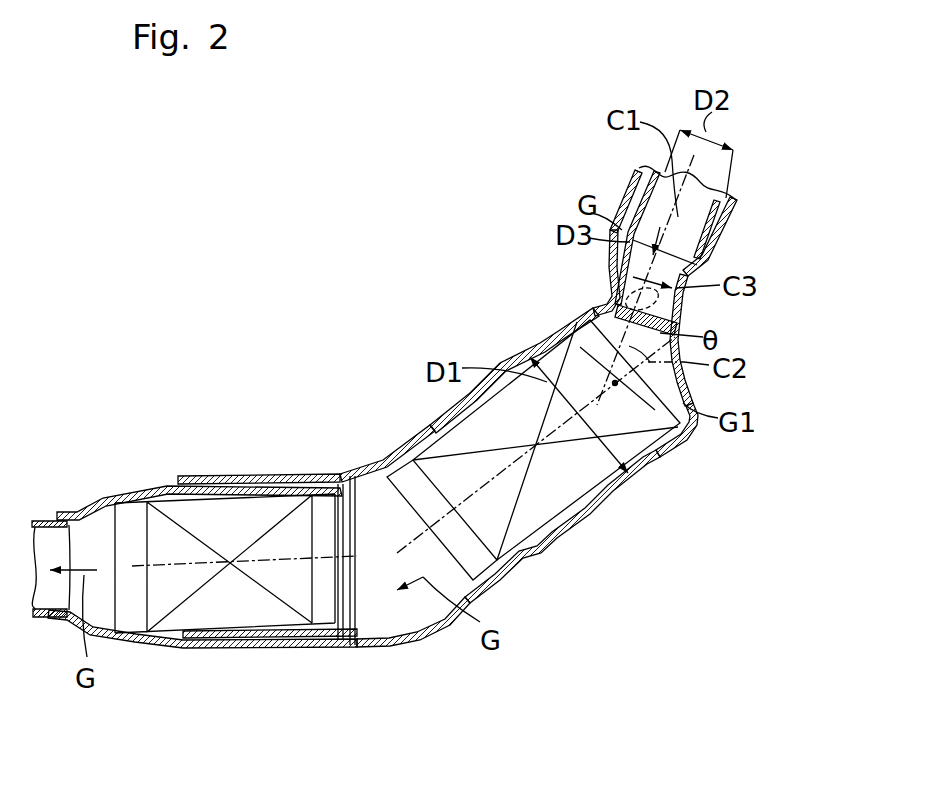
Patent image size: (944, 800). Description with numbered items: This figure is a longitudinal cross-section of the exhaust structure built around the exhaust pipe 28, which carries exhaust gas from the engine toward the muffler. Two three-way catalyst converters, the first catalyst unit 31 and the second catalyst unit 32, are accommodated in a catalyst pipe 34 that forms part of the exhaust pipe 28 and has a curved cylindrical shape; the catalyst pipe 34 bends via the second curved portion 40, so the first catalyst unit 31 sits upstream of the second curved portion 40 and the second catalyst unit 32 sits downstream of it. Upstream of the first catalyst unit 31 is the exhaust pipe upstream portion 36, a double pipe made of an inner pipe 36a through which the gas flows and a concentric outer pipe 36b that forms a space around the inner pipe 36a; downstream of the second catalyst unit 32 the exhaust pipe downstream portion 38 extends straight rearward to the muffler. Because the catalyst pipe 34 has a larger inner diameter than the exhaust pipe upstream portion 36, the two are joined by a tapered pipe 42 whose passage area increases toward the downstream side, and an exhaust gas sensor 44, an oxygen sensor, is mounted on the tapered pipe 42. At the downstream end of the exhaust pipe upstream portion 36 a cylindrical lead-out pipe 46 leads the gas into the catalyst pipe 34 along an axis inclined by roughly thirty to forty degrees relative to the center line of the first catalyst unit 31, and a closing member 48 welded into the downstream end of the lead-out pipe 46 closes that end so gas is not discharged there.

The exhaust pipe 28 is at (637, 517).
The first catalyst unit 31 is at (547, 507).
The second catalyst unit 32 is at (243, 615).
The catalyst pipe 34 is at (360, 460).
The exhaust pipe upstream portion 36 is at (687, 273).
The inner pipe 36a is at (714, 250).
The outer pipe 36b is at (722, 226).
The exhaust pipe downstream portion 38 is at (43, 520).
The second curved portion 40 is at (428, 600).
The tapered pipe 42 is at (600, 272).
The exhaust gas sensor 44 is at (597, 287).
The lead-out pipe 46 is at (676, 326).
The closing member 48 is at (558, 326).